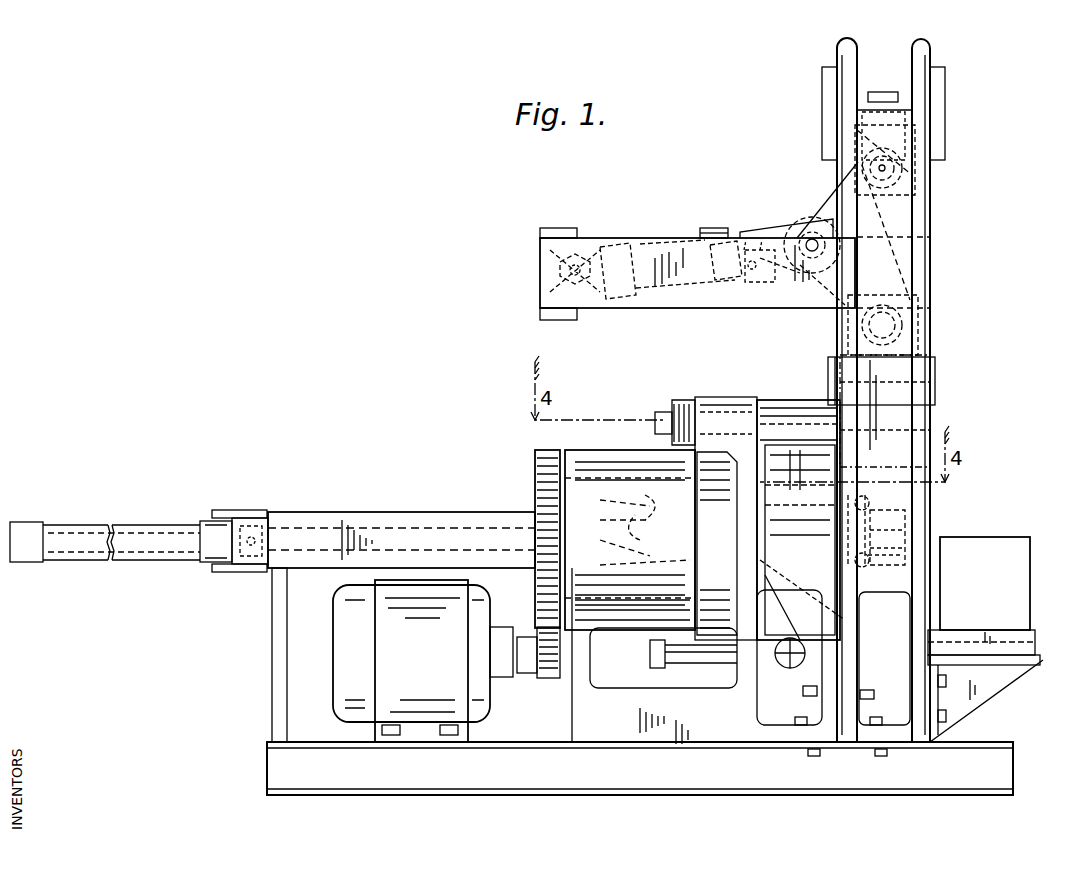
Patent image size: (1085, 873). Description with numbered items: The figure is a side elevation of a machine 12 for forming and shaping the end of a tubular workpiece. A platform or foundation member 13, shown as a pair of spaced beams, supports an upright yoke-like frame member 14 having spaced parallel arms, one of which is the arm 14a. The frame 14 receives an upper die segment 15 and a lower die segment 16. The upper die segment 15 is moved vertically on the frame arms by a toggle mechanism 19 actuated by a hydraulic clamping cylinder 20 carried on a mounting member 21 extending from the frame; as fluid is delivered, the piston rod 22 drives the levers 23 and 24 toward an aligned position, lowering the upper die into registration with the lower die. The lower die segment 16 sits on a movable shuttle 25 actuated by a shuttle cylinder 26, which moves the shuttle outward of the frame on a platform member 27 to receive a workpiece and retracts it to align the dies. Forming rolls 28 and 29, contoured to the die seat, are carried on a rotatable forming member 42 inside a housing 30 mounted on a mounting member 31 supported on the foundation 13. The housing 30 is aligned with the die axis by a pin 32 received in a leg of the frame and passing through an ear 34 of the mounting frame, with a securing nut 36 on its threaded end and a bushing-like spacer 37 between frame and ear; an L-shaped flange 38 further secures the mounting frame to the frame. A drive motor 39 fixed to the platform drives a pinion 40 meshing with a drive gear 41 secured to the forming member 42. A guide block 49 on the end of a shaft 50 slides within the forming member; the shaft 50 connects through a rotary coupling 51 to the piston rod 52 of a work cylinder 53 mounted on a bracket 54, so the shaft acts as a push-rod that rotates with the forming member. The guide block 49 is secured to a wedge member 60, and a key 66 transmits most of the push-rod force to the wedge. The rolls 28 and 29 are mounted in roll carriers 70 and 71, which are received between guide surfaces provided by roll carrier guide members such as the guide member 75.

The machine 12 is at (681, 208).
The platform or foundation member 13 is at (275, 780).
The upright yoke-like frame member 14 is at (930, 225).
The frame arm 14a is at (895, 268).
The upper die segment 15 is at (875, 468).
The lower die segment 16 is at (980, 552).
The toggle mechanism 19 is at (820, 192).
The hydraulic clamping cylinder 20 is at (703, 236).
The mounting member 21 is at (686, 298).
The piston rod 22 is at (770, 283).
The toggle lever 23 is at (808, 222).
The toggle lever 24 is at (820, 304).
The movable platform or shuttle 25 is at (1010, 645).
The hydraulic shuttle cylinder 26 is at (714, 655).
The platform member 27 is at (970, 706).
The forming and shaping roll 28 is at (866, 506).
The forming and shaping roll 29 is at (868, 566).
The housing 30 is at (622, 470).
The mounting member 31 is at (608, 700).
The pin 32 is at (778, 410).
The ear 34 is at (725, 405).
The securing nut 36 is at (683, 400).
The bushing-like spacer 37 is at (815, 410).
The L-shaped flange 38 is at (812, 700).
The forming member drive motor 39 is at (353, 653).
The pinion 40 is at (548, 678).
The forming member drive gear 41 is at (533, 462).
The rotatable forming member 42 is at (620, 610).
The guide block 49 is at (645, 516).
The shaft 50 is at (432, 525).
The rotary coupling 51 is at (272, 512).
The piston rod 52 is at (240, 520).
The hydraulic work cylinder 53 is at (132, 538).
The mounting bracket 54 is at (356, 518).
The wedge member 60 is at (712, 568).
The key 66 is at (655, 552).
The roll carrier 70 is at (912, 518).
The roll carrier 71 is at (915, 556).
The roll carrier guide member 75 is at (805, 538).